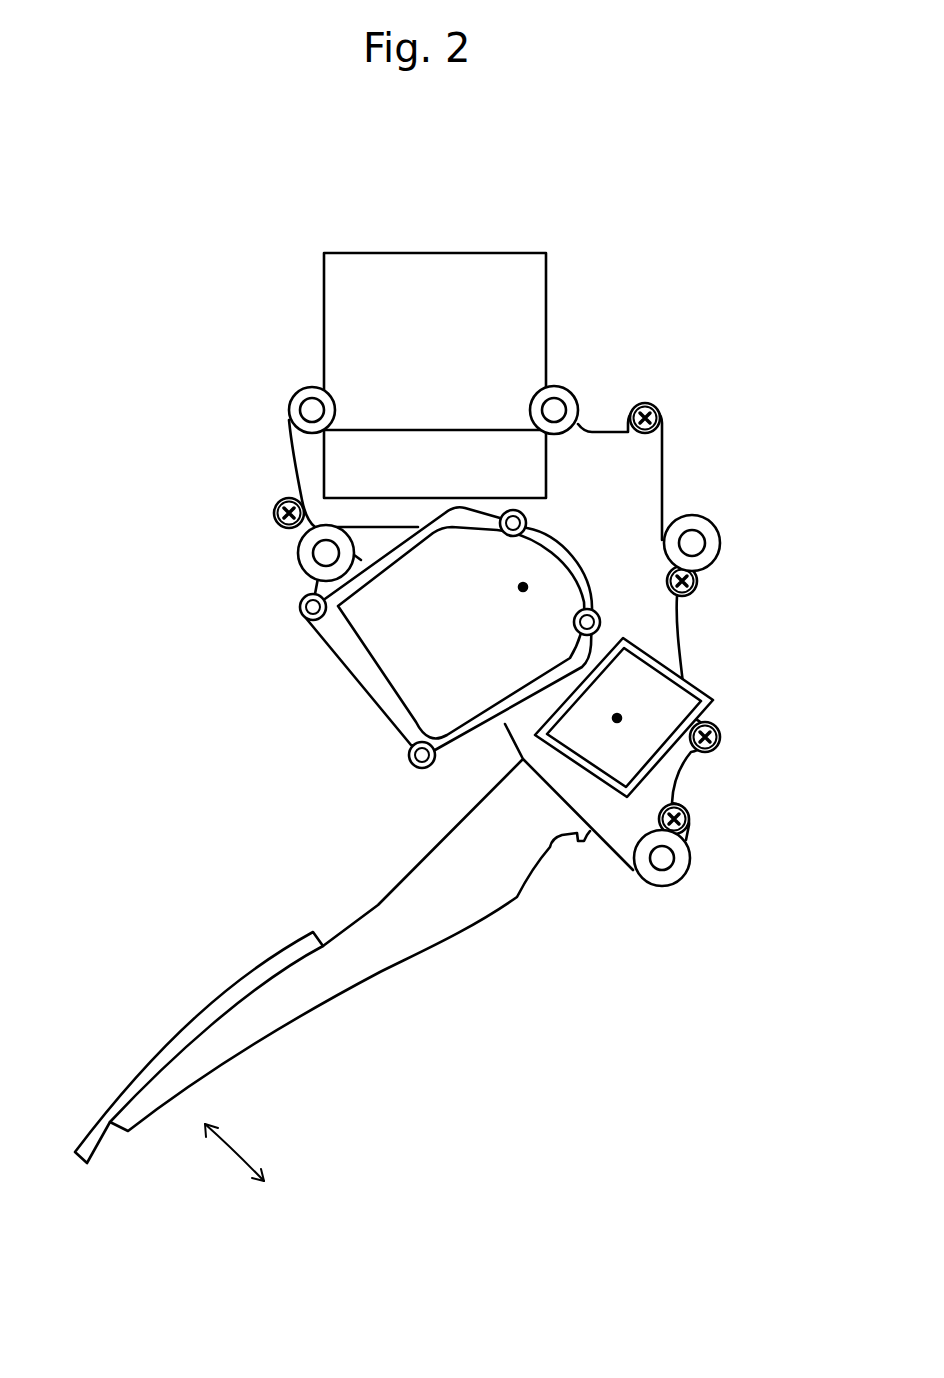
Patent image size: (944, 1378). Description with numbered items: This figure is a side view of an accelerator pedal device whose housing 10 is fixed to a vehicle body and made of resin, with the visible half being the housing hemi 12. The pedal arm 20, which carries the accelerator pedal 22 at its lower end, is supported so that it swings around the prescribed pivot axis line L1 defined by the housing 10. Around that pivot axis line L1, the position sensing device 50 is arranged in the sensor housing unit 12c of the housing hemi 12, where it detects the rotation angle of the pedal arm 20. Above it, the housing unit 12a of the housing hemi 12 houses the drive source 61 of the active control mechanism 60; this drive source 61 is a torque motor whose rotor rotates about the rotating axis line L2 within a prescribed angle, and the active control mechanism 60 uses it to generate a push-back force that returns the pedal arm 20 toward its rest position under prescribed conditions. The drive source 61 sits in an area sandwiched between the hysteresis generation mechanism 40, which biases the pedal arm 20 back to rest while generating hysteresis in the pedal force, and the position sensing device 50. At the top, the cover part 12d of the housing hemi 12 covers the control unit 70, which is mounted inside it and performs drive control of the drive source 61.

The housing 10 is at (506, 561).
The housing hemi 12 is at (506, 561).
The housing unit 12a is at (482, 722).
The sensor housing unit 12c is at (674, 766).
The cover part 12d is at (343, 295).
The pedal arm 20 is at (332, 970).
The accelerator pedal 22 is at (248, 960).
The hysteresis generation mechanism 40 is at (572, 475).
The position sensing device 50 is at (627, 692).
The active control mechanism 60 is at (426, 637).
The drive source 61 is at (480, 613).
The control unit 70 is at (423, 375).
The pivot axis line L1 is at (627, 715).
The rotating axis line L2 is at (512, 584).